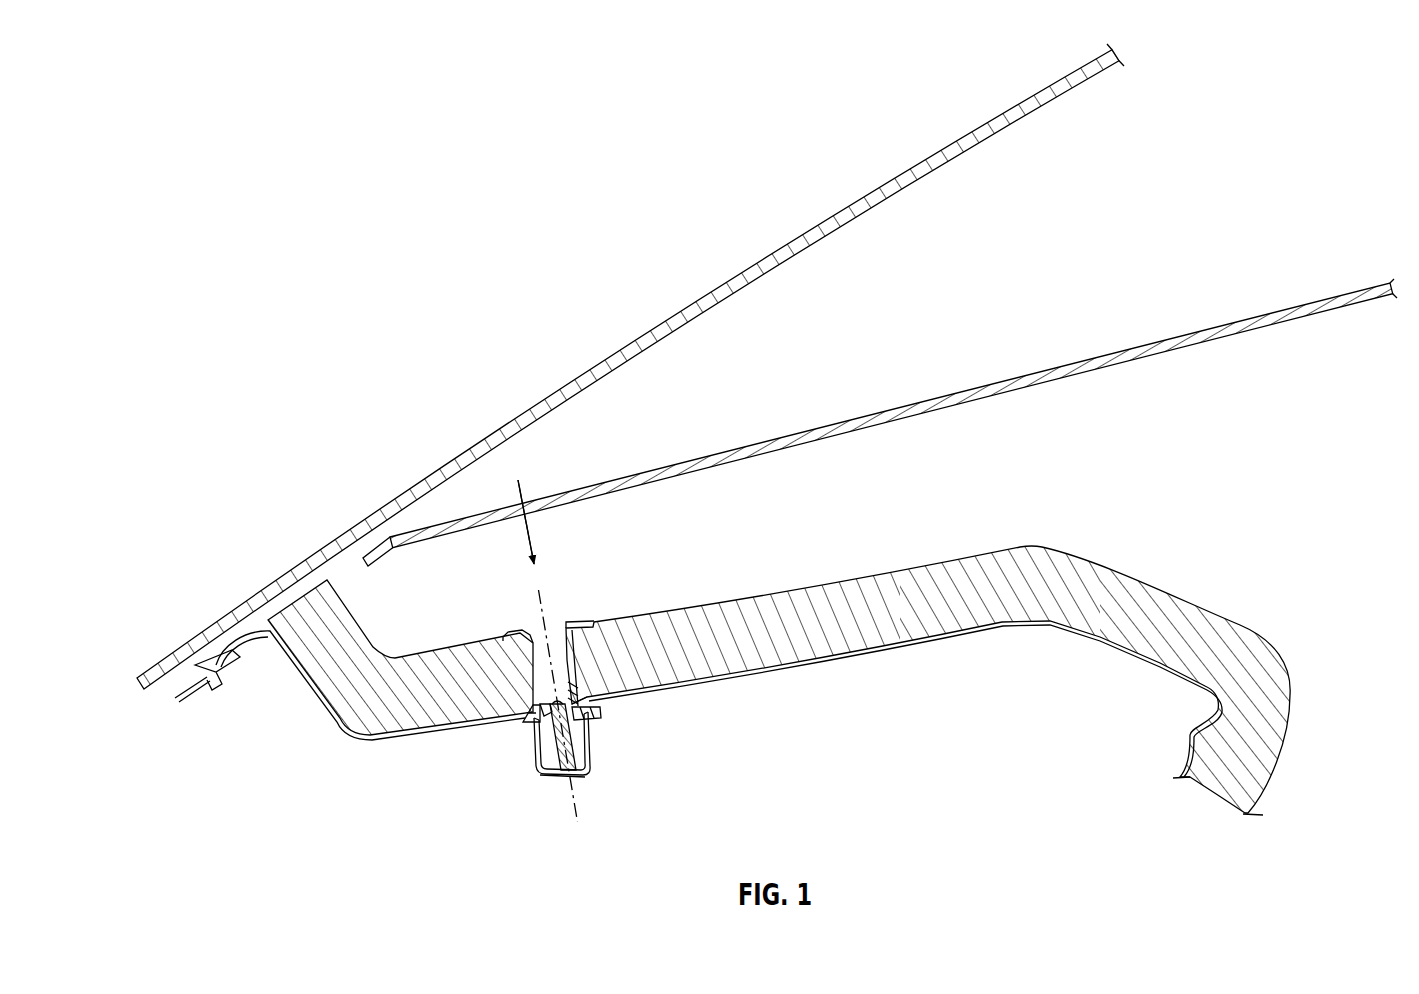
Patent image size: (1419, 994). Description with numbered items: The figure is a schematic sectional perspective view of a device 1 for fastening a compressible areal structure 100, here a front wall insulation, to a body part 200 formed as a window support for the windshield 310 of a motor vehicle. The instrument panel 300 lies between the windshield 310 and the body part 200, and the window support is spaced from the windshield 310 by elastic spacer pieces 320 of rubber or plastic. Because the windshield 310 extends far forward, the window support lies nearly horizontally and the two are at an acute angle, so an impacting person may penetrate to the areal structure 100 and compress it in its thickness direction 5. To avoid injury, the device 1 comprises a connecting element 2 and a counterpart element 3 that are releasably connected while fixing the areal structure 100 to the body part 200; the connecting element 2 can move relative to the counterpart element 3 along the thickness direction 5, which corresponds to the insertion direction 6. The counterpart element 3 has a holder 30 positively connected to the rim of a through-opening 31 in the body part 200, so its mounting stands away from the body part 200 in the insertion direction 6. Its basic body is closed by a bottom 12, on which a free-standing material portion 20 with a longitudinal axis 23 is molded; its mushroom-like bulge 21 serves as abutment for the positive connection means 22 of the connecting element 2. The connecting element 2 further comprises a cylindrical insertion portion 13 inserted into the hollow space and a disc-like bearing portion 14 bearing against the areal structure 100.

The device 1 is at (591, 685).
The connecting element 2 is at (520, 652).
The counterpart element 3 is at (557, 779).
The thickness direction 5 is at (555, 509).
The insertion direction 6 is at (520, 482).
The bottom 12 is at (589, 770).
The insertion portion 13 is at (580, 650).
The bearing portion 14 is at (568, 626).
The material portion 20 is at (571, 730).
The bulge 21 is at (542, 709).
The positive connection means 22 is at (533, 752).
The longitudinal axis 23 is at (536, 595).
The holder 30 is at (523, 723).
The through-opening 31 is at (605, 702).
The compressible areal structure 100 is at (1054, 549).
The body part 200 is at (306, 686).
The instrument panel 300 is at (1262, 316).
The windshield 310 is at (903, 172).
The spacer pieces 320 is at (188, 652).